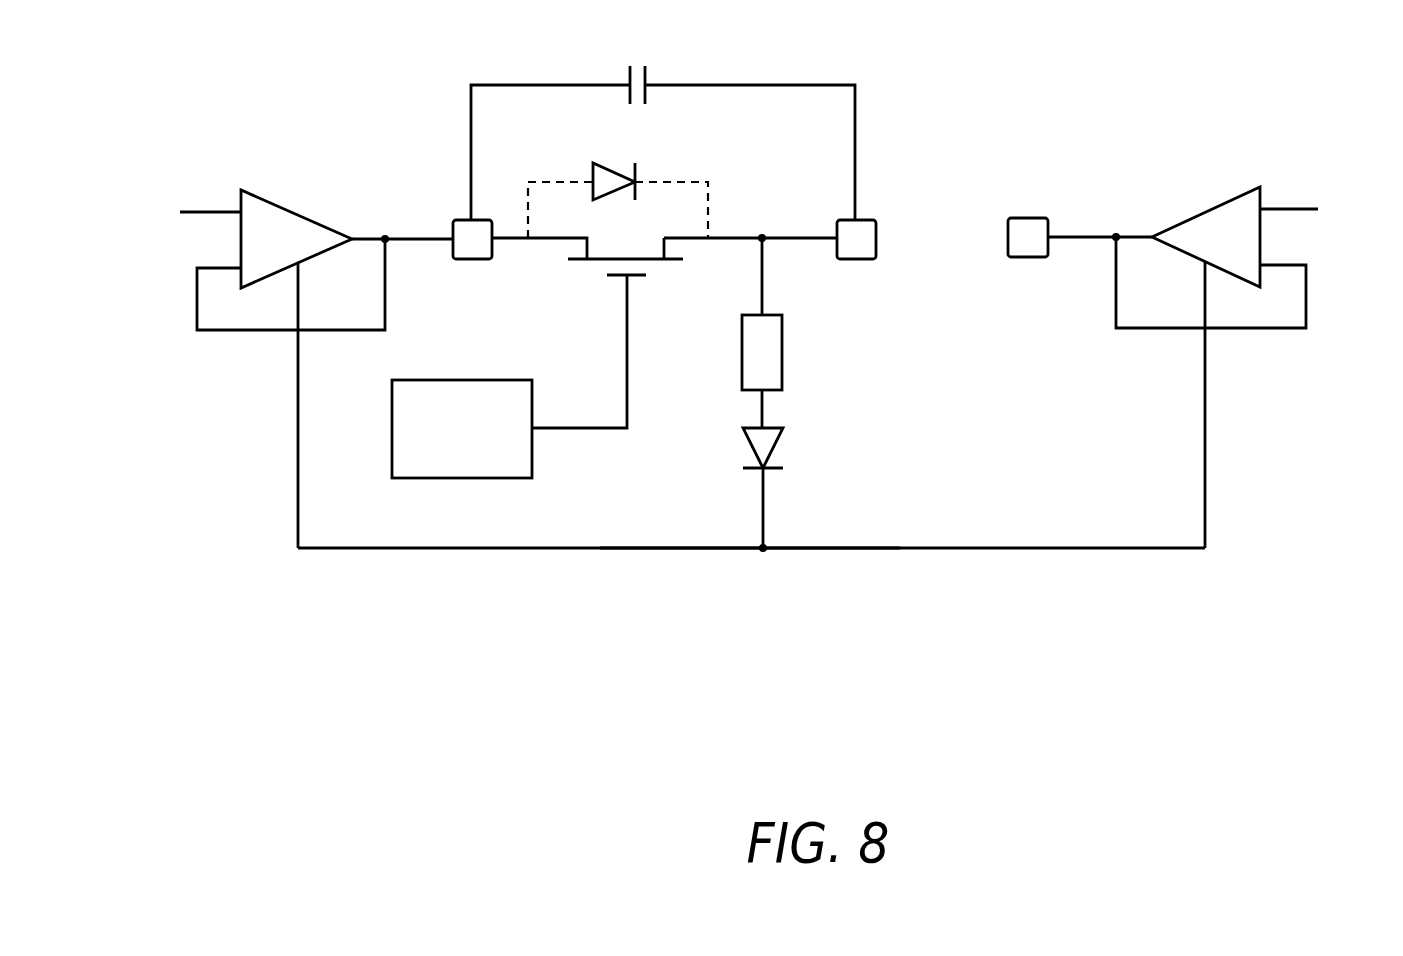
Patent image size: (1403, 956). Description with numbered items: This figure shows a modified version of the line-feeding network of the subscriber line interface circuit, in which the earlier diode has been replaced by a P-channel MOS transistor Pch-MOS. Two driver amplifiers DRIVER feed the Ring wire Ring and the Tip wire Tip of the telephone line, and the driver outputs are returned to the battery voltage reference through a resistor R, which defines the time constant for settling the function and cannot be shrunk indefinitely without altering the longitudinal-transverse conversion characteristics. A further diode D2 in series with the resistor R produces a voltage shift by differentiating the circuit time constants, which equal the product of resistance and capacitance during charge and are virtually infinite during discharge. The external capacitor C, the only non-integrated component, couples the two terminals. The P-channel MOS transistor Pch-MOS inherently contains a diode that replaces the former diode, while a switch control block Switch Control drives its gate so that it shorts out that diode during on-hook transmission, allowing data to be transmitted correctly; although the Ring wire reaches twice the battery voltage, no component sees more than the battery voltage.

The driver DRIVER is at (296, 214).
The capacitor C is at (663, 123).
The P-channel MOS transistor Pch-MOS is at (600, 275).
The Ring wire Ring is at (685, 269).
The Tip wire Tip is at (1035, 268).
The switch control Switch Control is at (462, 429).
The resistor R is at (780, 333).
The diode D2 is at (787, 488).